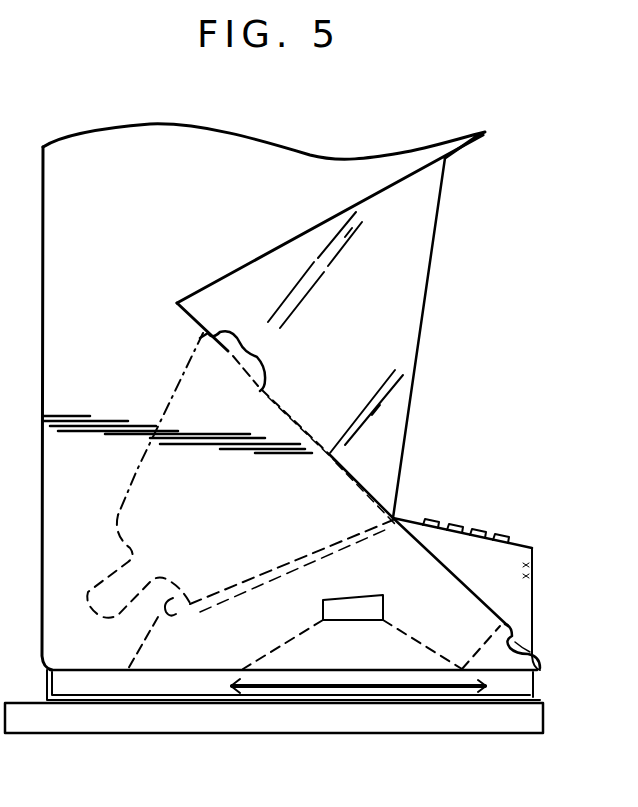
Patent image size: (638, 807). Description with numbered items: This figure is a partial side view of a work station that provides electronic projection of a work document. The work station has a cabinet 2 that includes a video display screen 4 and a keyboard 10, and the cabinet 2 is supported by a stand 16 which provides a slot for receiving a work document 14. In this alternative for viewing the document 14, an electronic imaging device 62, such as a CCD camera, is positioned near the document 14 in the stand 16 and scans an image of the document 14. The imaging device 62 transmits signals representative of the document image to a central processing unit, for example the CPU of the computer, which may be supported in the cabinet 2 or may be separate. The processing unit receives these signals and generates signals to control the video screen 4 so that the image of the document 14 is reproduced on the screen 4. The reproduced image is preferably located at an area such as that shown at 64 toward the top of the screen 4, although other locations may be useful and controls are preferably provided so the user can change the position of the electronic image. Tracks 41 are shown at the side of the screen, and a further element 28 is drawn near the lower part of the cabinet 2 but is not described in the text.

The cabinet 2 is at (137, 249).
The video display screen 4 is at (262, 397).
The keyboard 10 is at (503, 564).
The work document 14 is at (417, 690).
The stand 16 is at (536, 680).
The pivot 28 is at (172, 614).
The tracks 41 is at (540, 663).
The electronic imaging device 62 is at (323, 604).
The reproduced image area 64 is at (248, 355).